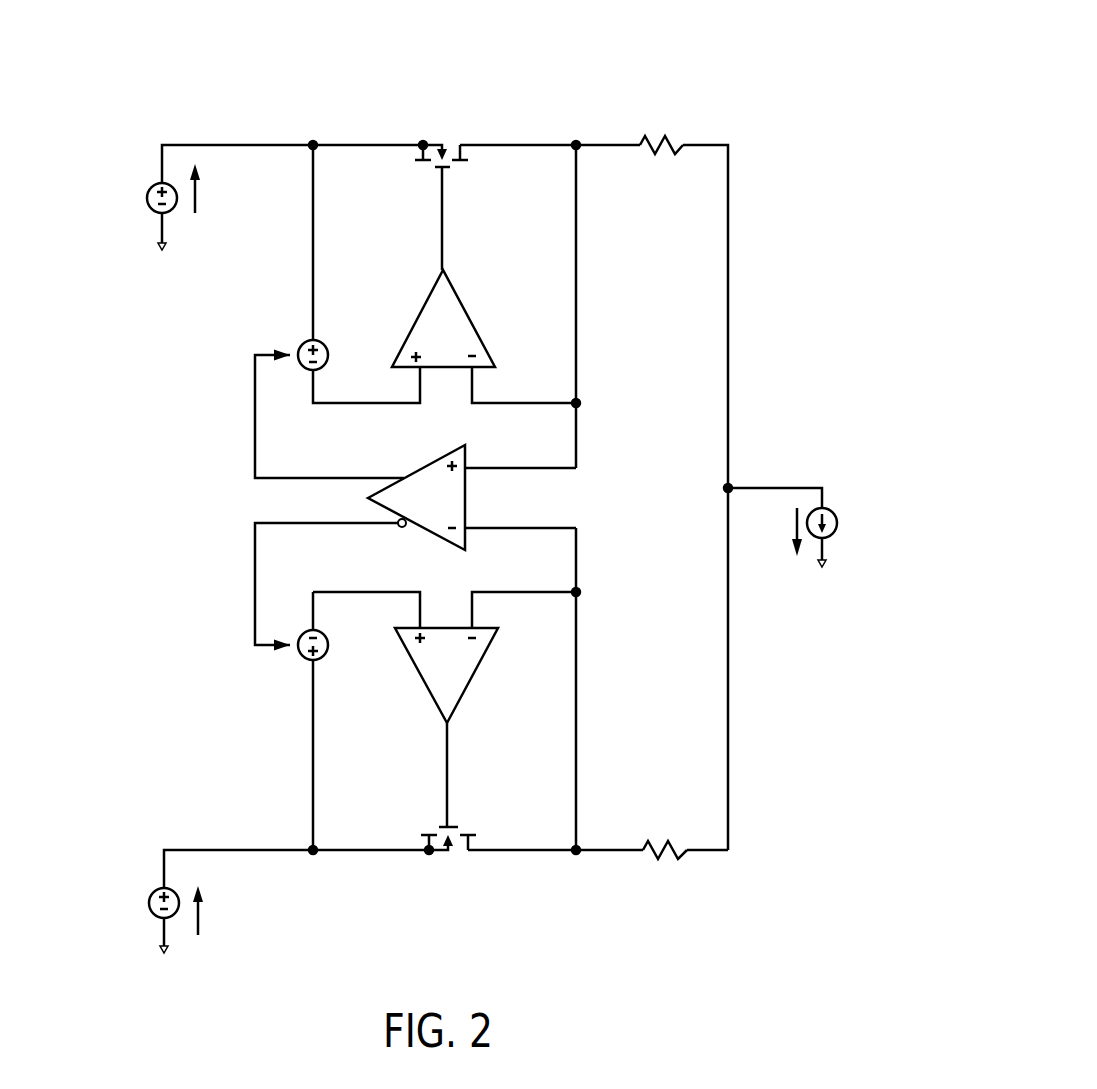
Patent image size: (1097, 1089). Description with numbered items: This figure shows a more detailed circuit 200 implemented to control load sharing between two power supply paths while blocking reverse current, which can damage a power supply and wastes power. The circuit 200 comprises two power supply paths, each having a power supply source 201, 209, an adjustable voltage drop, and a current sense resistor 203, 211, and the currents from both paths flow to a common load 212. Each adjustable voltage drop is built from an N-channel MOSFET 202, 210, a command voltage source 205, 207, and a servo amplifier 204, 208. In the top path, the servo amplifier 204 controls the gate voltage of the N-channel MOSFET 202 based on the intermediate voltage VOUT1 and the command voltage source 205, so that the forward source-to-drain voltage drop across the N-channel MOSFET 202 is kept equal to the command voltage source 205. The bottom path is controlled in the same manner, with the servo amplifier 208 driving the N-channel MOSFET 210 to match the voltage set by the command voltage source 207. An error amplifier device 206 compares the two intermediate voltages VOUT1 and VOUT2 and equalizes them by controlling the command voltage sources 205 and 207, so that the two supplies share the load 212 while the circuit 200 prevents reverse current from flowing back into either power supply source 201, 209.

The circuit 200 is at (888, 62).
The power supply source 201 is at (147, 199).
The N-channel MOSFET 202 is at (447, 116).
The current sense resistor 203 is at (665, 116).
The servo amplifier 204 is at (469, 318).
The command voltage source 205 is at (324, 345).
The error amplifier device 206 is at (466, 496).
The command voltage source 207 is at (324, 656).
The servo amplifier 208 is at (477, 668).
The power supply source 209 is at (149, 902).
The N-channel MOSFET 210 is at (450, 874).
The current sense resistor 211 is at (667, 874).
The common load 212 is at (837, 527).